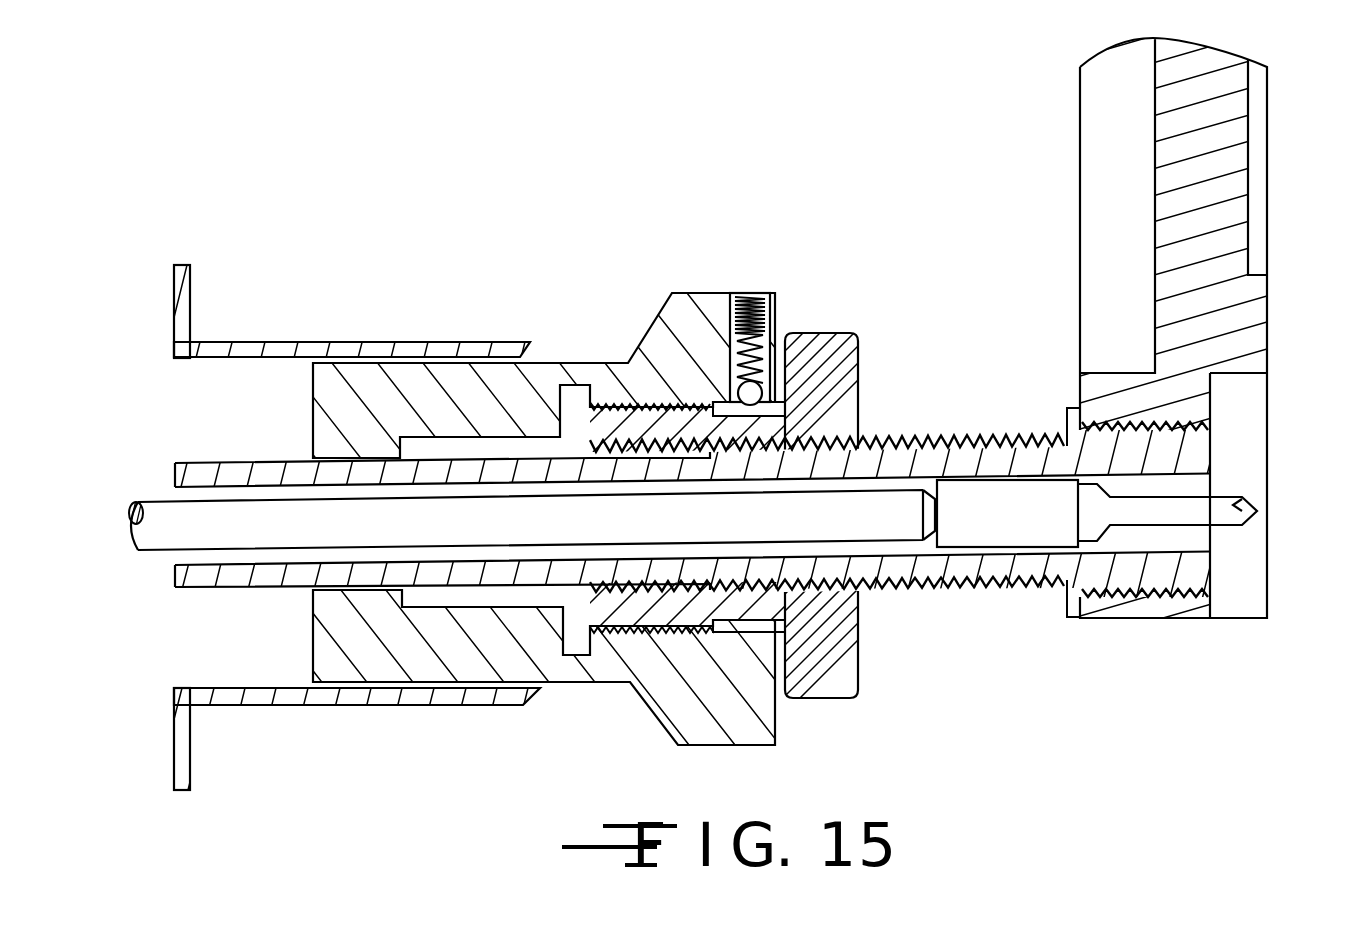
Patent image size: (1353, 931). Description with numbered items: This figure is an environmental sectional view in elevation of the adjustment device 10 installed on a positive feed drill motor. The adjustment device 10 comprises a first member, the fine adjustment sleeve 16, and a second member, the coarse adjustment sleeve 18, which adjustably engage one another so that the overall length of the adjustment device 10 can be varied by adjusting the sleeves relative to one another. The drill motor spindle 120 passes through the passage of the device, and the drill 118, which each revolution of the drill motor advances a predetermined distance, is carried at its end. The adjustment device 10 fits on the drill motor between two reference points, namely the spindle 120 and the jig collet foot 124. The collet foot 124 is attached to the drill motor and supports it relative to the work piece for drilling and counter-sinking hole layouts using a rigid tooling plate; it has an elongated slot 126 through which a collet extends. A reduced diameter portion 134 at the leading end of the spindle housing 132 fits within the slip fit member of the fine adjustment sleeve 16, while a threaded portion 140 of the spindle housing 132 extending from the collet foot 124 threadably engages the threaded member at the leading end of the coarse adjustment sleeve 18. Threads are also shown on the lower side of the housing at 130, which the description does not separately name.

The adjustment device 10 is at (812, 200).
The fine adjustment sleeve 16 is at (591, 314).
The coarse adjustment sleeve 18 is at (850, 318).
The drill 118 is at (1242, 495).
The drill motor spindle 120 is at (170, 527).
The jig collet foot 124 is at (1262, 320).
The elongated slot 126 is at (1258, 200).
The lower threads 130 is at (897, 622).
The spindle housing 132 is at (368, 341).
The reduced diameter portion 134 is at (268, 462).
The threaded portion 140 is at (905, 435).